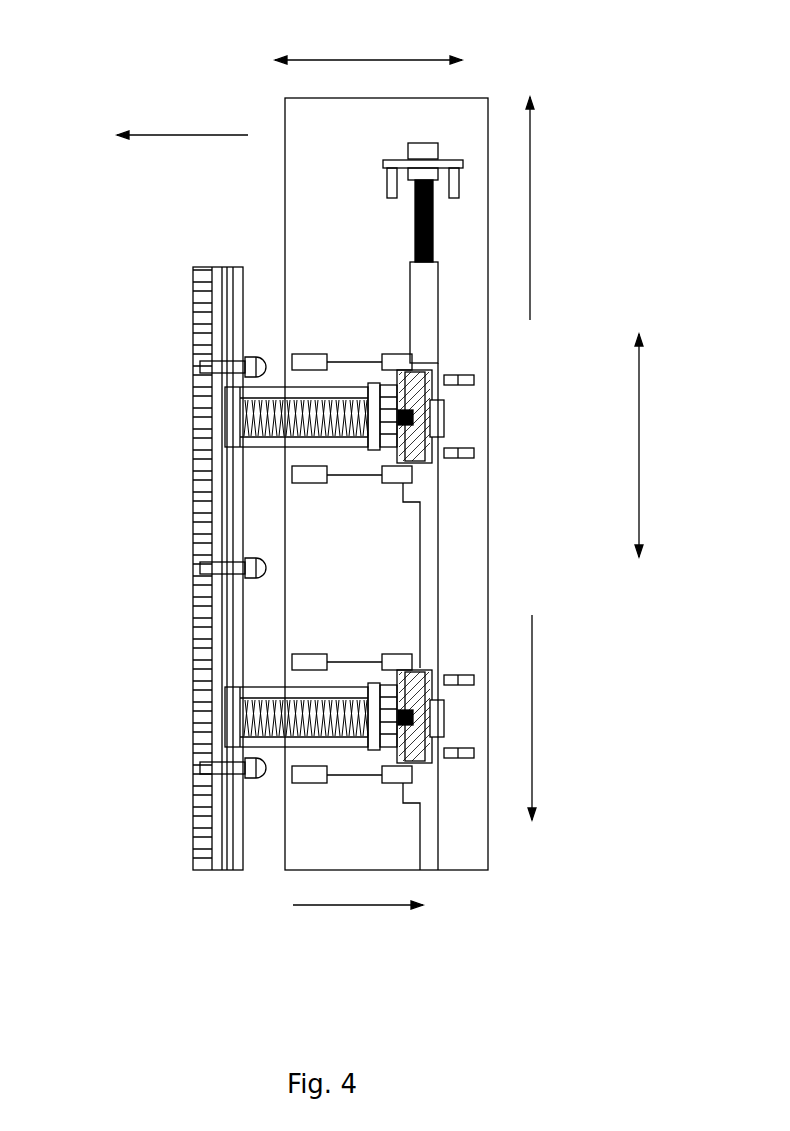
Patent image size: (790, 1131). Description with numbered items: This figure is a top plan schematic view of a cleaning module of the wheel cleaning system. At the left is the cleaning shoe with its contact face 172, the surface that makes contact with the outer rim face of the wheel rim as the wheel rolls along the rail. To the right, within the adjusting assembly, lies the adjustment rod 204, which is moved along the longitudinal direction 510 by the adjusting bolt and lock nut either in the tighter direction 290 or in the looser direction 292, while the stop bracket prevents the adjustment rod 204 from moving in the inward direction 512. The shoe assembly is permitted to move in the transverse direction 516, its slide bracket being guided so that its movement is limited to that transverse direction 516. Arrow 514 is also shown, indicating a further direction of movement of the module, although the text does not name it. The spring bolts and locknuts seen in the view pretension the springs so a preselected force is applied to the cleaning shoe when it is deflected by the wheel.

The contact face 172 is at (193, 807).
The adjustment rod 204 is at (425, 548).
The tighter direction 290 is at (565, 208).
The looser direction 292 is at (570, 717).
The longitudinal direction 510 is at (671, 445).
The inward direction 512 is at (358, 929).
The direction of movement 514 is at (182, 160).
The transverse direction 516 is at (368, 36).